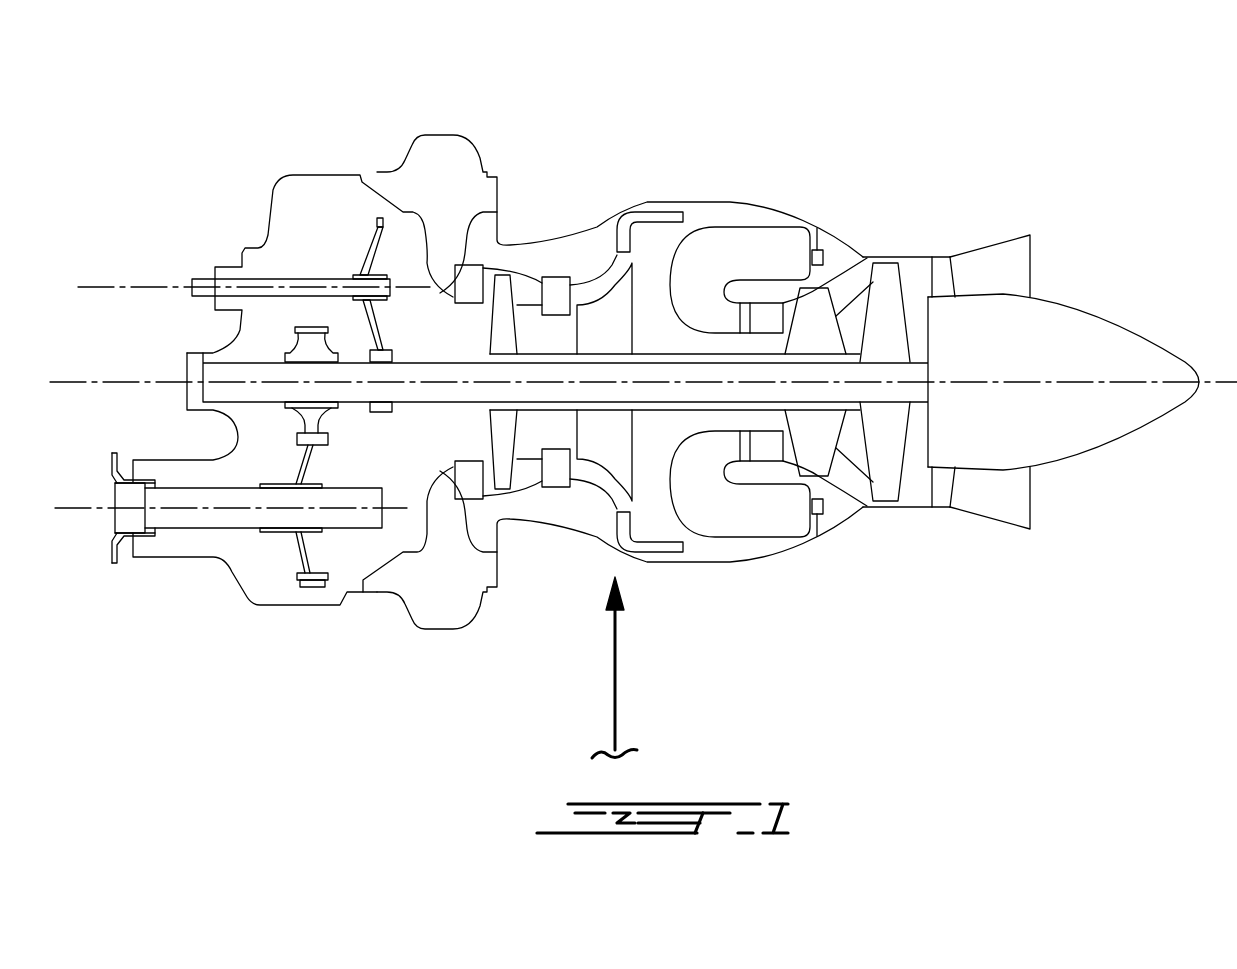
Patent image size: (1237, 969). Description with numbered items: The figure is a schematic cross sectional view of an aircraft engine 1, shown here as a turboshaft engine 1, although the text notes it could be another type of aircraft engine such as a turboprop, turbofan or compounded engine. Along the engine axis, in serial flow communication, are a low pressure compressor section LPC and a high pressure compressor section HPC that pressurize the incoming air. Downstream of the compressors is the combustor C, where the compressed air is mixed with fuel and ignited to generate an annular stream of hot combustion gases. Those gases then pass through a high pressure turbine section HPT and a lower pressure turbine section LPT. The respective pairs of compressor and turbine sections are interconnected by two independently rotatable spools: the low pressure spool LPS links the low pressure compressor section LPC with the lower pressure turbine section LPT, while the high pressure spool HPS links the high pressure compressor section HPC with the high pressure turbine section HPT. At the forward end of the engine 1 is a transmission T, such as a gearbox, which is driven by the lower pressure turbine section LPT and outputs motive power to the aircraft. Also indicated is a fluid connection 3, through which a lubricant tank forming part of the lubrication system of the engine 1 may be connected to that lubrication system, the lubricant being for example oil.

The aircraft engine 1 is at (1050, 100).
The low pressure compressor section LPC is at (515, 200).
The high pressure compressor section HPC is at (613, 188).
The combustor C is at (722, 563).
The high pressure turbine section HPT is at (833, 204).
The lower pressure turbine section LPT is at (904, 232).
The low pressure spool LPS is at (440, 404).
The high pressure spool HPS is at (542, 410).
The transmission T is at (185, 552).
The fluid connection 3 is at (617, 687).